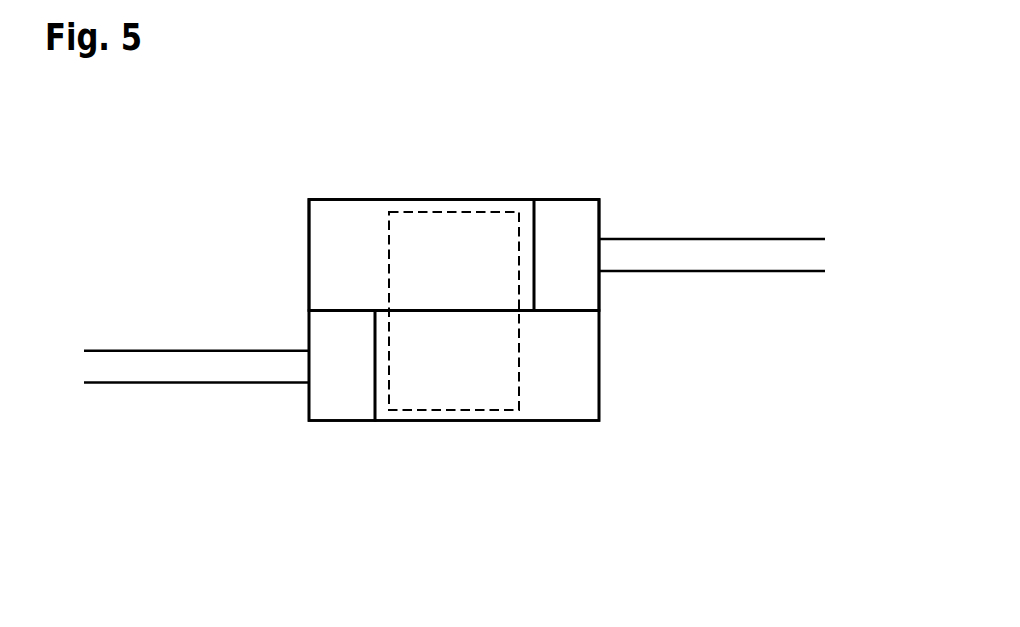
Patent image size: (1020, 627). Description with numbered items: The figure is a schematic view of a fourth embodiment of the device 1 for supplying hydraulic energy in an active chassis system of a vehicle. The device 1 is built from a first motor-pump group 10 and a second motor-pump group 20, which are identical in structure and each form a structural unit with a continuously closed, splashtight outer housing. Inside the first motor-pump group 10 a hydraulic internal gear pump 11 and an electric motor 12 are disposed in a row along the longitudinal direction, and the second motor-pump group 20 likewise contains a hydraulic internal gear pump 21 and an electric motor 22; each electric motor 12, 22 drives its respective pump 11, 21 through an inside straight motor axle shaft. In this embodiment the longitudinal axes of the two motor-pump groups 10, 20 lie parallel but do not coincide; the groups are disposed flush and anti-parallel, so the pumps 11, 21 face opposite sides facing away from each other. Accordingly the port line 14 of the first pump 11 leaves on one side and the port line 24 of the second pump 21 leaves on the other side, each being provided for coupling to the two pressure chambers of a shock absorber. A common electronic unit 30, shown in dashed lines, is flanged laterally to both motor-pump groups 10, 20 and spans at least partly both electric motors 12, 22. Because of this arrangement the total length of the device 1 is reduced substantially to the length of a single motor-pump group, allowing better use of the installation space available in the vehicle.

The device 1 is at (667, 143).
The first motor-pump group 10 is at (622, 375).
The hydraulic internal gear pump 11 is at (343, 402).
The electric motor 12 is at (548, 402).
The port line 14 is at (197, 351).
The second motor-pump group 20 is at (288, 265).
The hydraulic internal gear pump 21 is at (566, 219).
The electric motor 22 is at (361, 219).
The port line 24 is at (789, 239).
The common electronic unit 30 is at (453, 410).